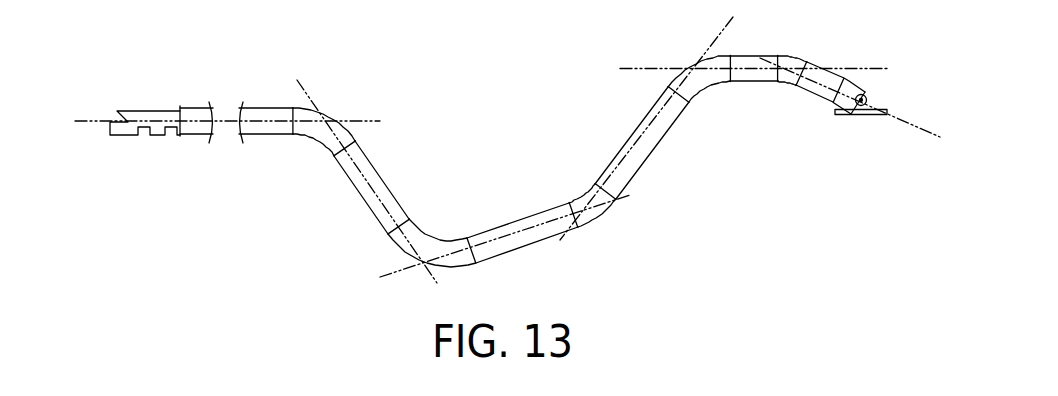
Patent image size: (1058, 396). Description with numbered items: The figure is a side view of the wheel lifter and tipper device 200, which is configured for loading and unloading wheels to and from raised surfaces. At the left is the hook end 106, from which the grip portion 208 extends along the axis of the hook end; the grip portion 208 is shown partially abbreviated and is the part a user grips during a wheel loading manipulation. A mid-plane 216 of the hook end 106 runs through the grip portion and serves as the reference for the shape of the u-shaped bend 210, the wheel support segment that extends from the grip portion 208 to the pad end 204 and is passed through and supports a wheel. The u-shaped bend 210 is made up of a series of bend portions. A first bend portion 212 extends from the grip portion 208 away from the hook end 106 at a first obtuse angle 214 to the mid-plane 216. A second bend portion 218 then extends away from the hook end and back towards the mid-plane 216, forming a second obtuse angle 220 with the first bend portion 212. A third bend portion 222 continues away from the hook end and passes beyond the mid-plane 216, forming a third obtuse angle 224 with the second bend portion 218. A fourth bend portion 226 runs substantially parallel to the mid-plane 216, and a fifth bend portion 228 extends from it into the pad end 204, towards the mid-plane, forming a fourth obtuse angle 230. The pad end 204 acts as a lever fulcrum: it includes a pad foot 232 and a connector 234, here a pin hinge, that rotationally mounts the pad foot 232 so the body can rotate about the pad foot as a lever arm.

The hook end 106 is at (138, 143).
The wheel lifter and tipper device 200 is at (524, 148).
The pad end 204 is at (865, 131).
The grip portion 208 is at (221, 76).
The u-shaped bend 210 is at (488, 84).
The first bend portion 212 is at (378, 177).
The first obtuse angle 214 is at (318, 146).
The mid-plane 216 is at (203, 121).
The second bend portion 218 is at (532, 242).
The second obtuse angle 220 is at (433, 235).
The third bend portion 222 is at (645, 116).
The third obtuse angle 224 is at (576, 191).
The fourth bend portion 226 is at (766, 78).
The fifth bend portion 228 is at (830, 72).
The fourth obtuse angle 230 is at (784, 88).
The pad foot 232 is at (861, 108).
The connector 234 is at (867, 96).